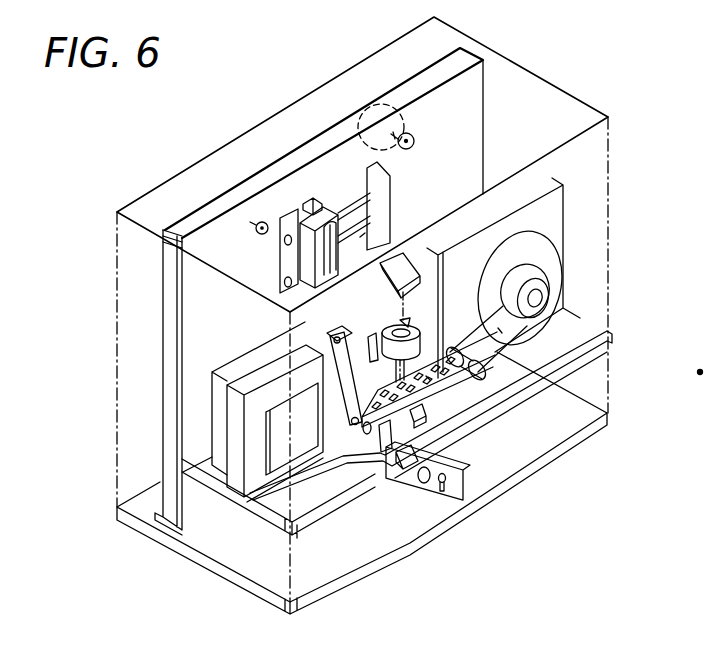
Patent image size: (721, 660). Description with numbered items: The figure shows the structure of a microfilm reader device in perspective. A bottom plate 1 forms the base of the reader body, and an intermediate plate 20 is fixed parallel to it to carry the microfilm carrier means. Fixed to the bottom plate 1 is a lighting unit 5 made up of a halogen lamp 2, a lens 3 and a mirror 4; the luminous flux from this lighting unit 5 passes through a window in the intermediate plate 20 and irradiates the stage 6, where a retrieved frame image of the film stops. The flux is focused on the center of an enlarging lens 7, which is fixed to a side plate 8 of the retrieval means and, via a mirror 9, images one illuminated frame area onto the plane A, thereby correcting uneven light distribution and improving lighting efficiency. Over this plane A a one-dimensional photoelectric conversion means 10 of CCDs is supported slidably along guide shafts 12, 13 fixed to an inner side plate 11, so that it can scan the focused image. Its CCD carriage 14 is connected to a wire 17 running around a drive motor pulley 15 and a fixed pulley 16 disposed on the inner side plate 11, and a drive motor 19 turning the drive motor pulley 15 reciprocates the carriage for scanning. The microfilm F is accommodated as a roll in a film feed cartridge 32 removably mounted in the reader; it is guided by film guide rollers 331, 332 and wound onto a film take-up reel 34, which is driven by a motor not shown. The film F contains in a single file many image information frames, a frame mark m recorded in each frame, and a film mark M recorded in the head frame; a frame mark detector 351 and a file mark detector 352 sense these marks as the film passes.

The bottom plate 1 is at (365, 550).
The halogen lamp 2 is at (430, 482).
The lens 3 is at (441, 490).
The mirror 4 is at (403, 472).
The lighting unit 5 is at (482, 480).
The stage 6 is at (430, 406).
The enlarging lens 7 is at (415, 330).
The side plate 8 is at (434, 297).
The mirror 9 is at (408, 266).
The photoelectric conversion means 10 is at (298, 268).
The inner side plate 11 is at (203, 242).
The guide shaft 12 is at (338, 200).
The guide shaft 13 is at (365, 210).
The CCD carriage 14 is at (275, 213).
The drive motor pulley 15 is at (412, 138).
The fixed pulley 16 is at (263, 236).
The wire 17 is at (295, 205).
The drive motor 19 is at (378, 130).
The intermediate plate 20 is at (273, 505).
The film feed cartridge 32 is at (220, 415).
The film take-up reel 34 is at (547, 283).
The film guide roller 331 is at (343, 456).
The film guide roller 332 is at (487, 370).
The frame mark detector 351 is at (422, 422).
The file mark detector 352 is at (382, 394).
The plane A is at (362, 235).
The microfilm F is at (500, 330).
The film mark M is at (380, 452).
The frame mark m is at (428, 378).